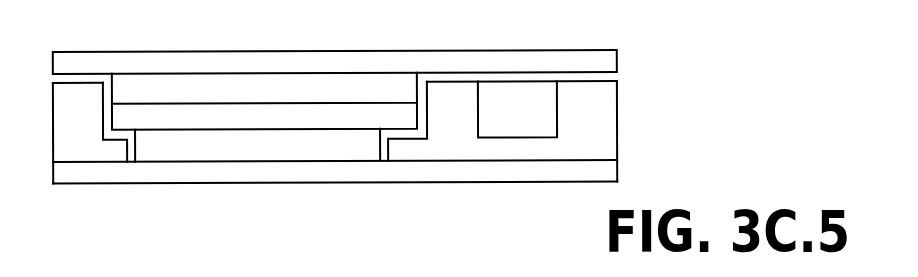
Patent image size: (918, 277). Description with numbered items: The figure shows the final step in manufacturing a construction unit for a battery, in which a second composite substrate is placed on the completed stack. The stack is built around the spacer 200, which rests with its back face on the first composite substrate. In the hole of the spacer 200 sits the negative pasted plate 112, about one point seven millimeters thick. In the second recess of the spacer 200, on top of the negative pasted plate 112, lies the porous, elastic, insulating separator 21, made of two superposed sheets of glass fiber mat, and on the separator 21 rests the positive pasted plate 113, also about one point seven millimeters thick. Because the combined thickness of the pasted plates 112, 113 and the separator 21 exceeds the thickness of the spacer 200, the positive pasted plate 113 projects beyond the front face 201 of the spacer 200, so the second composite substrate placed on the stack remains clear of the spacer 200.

The spacer 200 is at (604, 115).
The front face 201 is at (587, 82).
The negative pasted plate 112 is at (185, 145).
The positive pasted plate 113 is at (317, 85).
The separator 21 is at (252, 115).